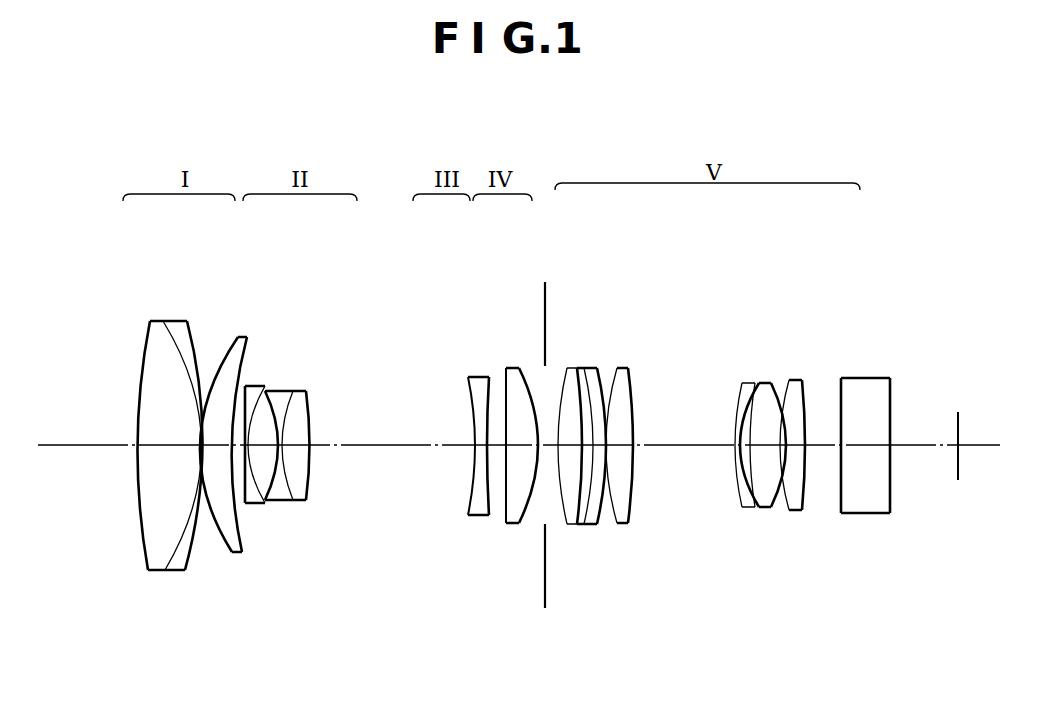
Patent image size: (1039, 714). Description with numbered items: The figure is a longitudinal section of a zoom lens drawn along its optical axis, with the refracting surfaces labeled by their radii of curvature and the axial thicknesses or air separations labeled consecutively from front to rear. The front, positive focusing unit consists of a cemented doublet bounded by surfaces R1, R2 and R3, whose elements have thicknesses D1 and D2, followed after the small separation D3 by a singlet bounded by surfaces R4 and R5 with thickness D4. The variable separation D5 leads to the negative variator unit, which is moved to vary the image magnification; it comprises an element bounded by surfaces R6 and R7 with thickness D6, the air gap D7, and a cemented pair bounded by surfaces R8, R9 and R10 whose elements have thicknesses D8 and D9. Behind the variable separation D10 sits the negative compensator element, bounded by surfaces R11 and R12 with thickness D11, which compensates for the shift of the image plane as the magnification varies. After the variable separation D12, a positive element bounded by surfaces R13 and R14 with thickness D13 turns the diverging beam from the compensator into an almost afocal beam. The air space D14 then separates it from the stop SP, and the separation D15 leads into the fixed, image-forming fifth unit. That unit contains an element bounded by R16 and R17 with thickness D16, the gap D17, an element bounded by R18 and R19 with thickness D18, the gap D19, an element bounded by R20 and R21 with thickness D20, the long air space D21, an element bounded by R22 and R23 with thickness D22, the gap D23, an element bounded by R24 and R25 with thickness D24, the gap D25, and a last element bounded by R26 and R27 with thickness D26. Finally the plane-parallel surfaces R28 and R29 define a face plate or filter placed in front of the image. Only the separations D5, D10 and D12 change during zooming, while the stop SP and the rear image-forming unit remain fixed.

The first lens surface R1 is at (146, 350).
The second lens surface R2 is at (164, 322).
The third lens surface R3 is at (196, 350).
The fourth lens surface R4 is at (221, 360).
The fifth lens surface R5 is at (208, 372).
The sixth lens surface R6 is at (246, 390).
The seventh lens surface R7 is at (258, 392).
The eighth lens surface R8 is at (268, 392).
The ninth lens surface R9 is at (288, 402).
The tenth lens surface R10 is at (306, 402).
The eleventh lens surface R11 is at (471, 392).
The twelfth lens surface R12 is at (489, 390).
The thirteenth lens surface R13 is at (508, 390).
The fourteenth lens surface R14 is at (522, 392).
The stop SP is at (546, 318).
The sixteenth lens surface R16 is at (562, 393).
The seventeenth lens surface R17 is at (574, 393).
The eighteenth lens surface R18 is at (583, 395).
The nineteenth lens surface R19 is at (599, 393).
The twentieth lens surface R20 is at (621, 393).
The twenty-first lens surface R21 is at (633, 395).
The twenty-second lens surface R22 is at (740, 407).
The twenty-third lens surface R23 is at (746, 398).
The twenty-fourth lens surface R24 is at (757, 392).
The twenty-fifth lens surface R25 is at (786, 392).
The twenty-sixth lens surface R26 is at (783, 393).
The twenty-seventh lens surface R27 is at (804, 393).
The face plate front surface R28 is at (848, 402).
The face plate rear surface R29 is at (892, 402).
The axial thickness D1 is at (143, 535).
The axial thickness D2 is at (172, 545).
The air separation D3 is at (217, 507).
The axial thickness D4 is at (236, 507).
The variable air separation D5 is at (238, 538).
The axial thickness D6 is at (253, 507).
The air separation D7 is at (266, 505).
The axial thickness D8 is at (277, 505).
The axial thickness D9 is at (295, 505).
The variable air separation D10 is at (375, 447).
The axial thickness D11 is at (477, 520).
The variable air separation D12 is at (503, 522).
The axial thickness D13 is at (512, 523).
The air separation D14 is at (542, 523).
The air separation D15 is at (550, 518).
The axial thickness D16 is at (572, 527).
The air separation D17 is at (584, 523).
The axial thickness D18 is at (597, 523).
The air separation D19 is at (622, 525).
The axial thickness D20 is at (630, 525).
The air separation D21 is at (690, 447).
The axial thickness D22 is at (742, 510).
The air separation D23 is at (752, 510).
The axial thickness D24 is at (762, 512).
The air separation D25 is at (777, 512).
The axial thickness D26 is at (800, 512).